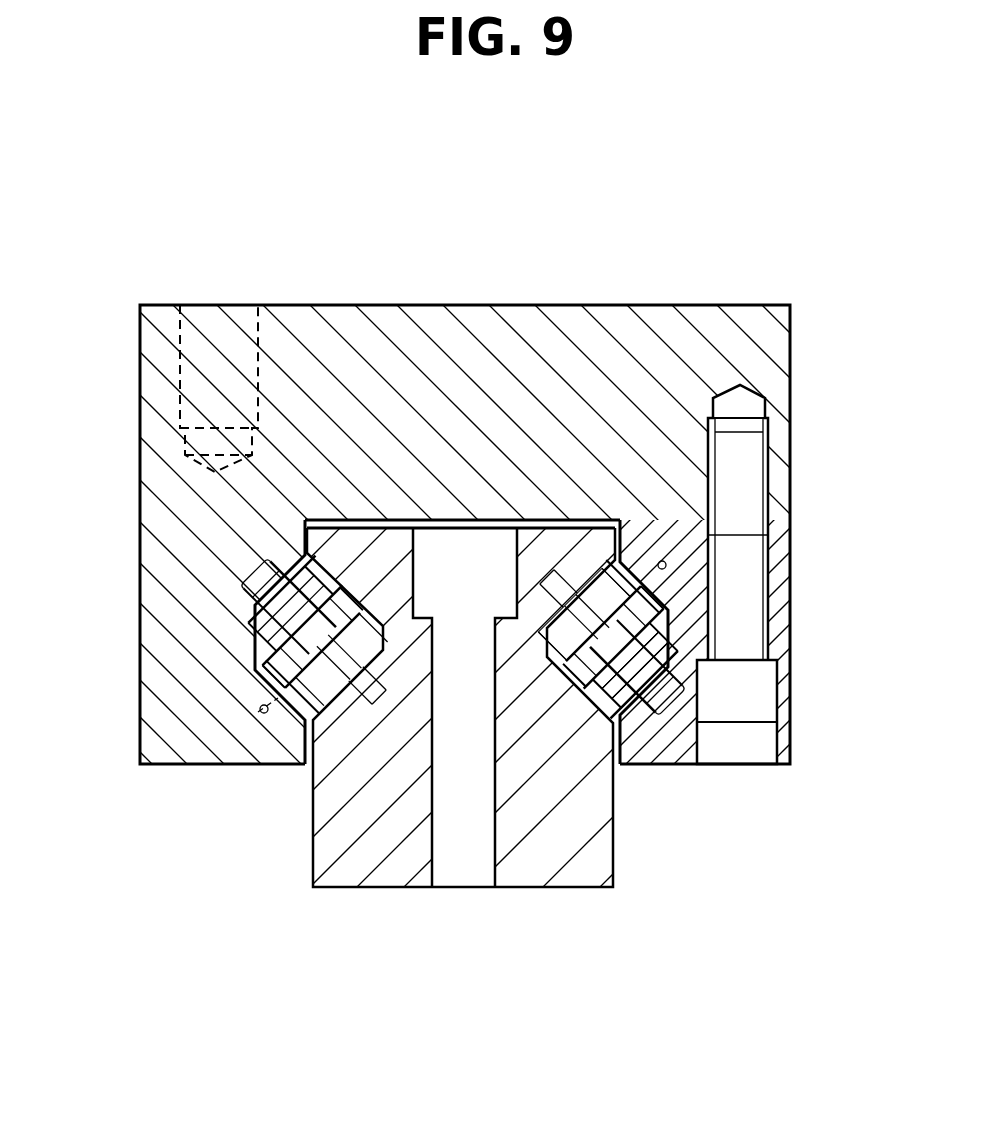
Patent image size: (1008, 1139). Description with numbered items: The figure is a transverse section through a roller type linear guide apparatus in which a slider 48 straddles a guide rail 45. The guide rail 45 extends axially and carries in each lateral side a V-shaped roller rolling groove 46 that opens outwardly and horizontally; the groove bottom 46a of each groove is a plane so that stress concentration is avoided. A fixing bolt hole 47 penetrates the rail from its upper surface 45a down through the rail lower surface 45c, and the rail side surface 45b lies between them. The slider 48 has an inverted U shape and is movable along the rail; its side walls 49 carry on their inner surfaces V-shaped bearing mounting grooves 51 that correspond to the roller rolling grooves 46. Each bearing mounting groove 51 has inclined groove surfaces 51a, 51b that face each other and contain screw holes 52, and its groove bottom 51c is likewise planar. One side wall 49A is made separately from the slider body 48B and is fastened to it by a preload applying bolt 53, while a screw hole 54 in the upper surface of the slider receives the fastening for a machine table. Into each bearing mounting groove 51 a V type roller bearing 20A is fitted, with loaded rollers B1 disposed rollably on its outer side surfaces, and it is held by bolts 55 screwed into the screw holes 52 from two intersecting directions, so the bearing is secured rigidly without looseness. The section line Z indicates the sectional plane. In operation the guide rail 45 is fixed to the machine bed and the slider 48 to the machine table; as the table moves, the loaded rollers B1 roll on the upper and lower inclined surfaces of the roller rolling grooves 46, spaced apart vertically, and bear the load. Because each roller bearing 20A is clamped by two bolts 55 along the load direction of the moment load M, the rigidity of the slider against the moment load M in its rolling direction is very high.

The V type roller bearing 20A is at (544, 1009).
The guide rail 45 is at (325, 872).
The upper surface 45a is at (548, 524).
The side face of slider body 45b is at (313, 810).
The rail lower surface 45c is at (573, 700).
The V-shaped roller rolling groove 46 is at (333, 690).
The groove bottom 46a is at (382, 640).
The fixing bolt hole 47 is at (437, 858).
The slider 48 is at (752, 326).
The slider body 48B is at (598, 332).
The side wall 49 is at (152, 738).
The side wall 49A is at (790, 717).
The V-shaped bearing mounting groove 51 is at (858, 578).
The groove surface 51a is at (667, 614).
The groove surface 51b is at (680, 648).
The groove bottom 51c is at (672, 634).
The screw hole 52 is at (668, 568).
The preload applying bolt 53 is at (750, 453).
The screw hole 54 is at (190, 322).
The bolt 55 is at (560, 648).
The loaded roller B1 is at (330, 562).
The section line Z- Z is at (255, 637).
The moment load M is at (515, 265).